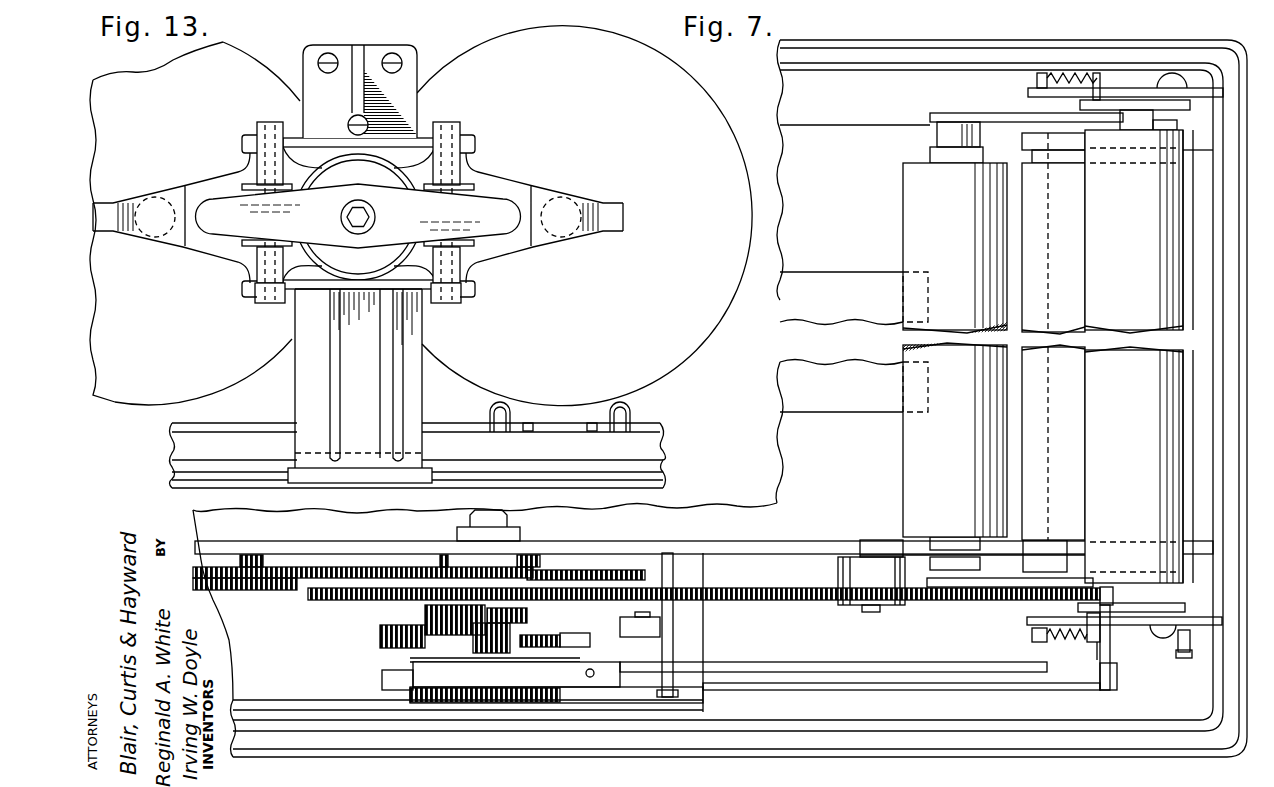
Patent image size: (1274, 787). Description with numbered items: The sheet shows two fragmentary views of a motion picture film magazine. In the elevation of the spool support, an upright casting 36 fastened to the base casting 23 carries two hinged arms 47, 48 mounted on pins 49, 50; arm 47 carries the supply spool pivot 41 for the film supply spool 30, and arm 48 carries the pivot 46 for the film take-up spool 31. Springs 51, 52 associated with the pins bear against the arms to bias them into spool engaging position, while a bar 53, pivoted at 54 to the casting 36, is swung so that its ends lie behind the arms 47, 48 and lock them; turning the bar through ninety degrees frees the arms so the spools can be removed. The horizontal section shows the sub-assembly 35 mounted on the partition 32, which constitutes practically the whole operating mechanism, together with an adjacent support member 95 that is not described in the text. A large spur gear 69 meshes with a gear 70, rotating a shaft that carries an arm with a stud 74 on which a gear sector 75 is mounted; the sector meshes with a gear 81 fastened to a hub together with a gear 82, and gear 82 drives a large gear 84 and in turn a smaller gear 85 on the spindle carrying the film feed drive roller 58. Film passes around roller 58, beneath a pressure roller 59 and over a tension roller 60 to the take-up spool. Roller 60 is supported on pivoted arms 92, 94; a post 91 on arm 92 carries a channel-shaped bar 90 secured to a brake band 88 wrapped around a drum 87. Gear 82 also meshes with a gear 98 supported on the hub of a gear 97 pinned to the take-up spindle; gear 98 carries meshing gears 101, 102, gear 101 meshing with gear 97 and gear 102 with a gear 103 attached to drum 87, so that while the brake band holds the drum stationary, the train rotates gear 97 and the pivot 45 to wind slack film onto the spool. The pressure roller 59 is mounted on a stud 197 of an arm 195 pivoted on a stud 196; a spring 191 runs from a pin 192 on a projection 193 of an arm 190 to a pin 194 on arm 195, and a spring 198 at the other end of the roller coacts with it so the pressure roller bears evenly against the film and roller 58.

In FIG. 13, the base casting 23 is at (172, 488).
In FIG. 13, the film supply spool 30 is at (655, 50).
In FIG. 13, the film take-up spool 31 is at (252, 56).
In FIG. 7, the partition 32 is at (752, 545).
In FIG. 7, the sub-assembly 35 is at (394, 666).
In FIG. 13, the upright casting 36 is at (412, 57).
In FIG. 13, the supply spool pivot 41 is at (580, 200).
In FIG. 7, the pivot 45 is at (462, 518).
In FIG. 13, the pivot 46 is at (150, 198).
In FIG. 13, the arm 47 is at (522, 190).
In FIG. 13, the arm 48 is at (195, 188).
In FIG. 13, the pin 49 is at (446, 130).
In FIG. 13, the pin 50 is at (272, 125).
In FIG. 13, the spring 51 is at (470, 183).
In FIG. 13, the spring 52 is at (242, 168).
In FIG. 13, the bar 53 is at (388, 240).
In FIG. 13, the pivot 54 is at (355, 205).
In FIG. 7, the drive roller 58 is at (1025, 440).
In FIG. 7, the pressure roller 59 is at (1090, 437).
In FIG. 7, the tension roller 60 is at (903, 443).
In FIG. 7, the spur gear 69 is at (280, 580).
In FIG. 7, the gear 70 is at (573, 570).
In FIG. 7, the stud 74 is at (645, 612).
In FIG. 7, the gear sector 75 is at (568, 638).
In FIG. 7, the gear 81 is at (528, 652).
In FIG. 7, the gear 82 is at (344, 600).
In FIG. 7, the large gear 84 is at (812, 596).
In FIG. 7, the gear 85 is at (1073, 604).
In FIG. 7, the drum 87 is at (478, 703).
In FIG. 7, the brake band 88 is at (513, 685).
In FIG. 7, the channel-shaped bar 90 is at (958, 672).
In FIG. 7, the post 91 is at (1113, 648).
In FIG. 7, the arm 92 is at (993, 583).
In FIG. 7, the arm 94 is at (996, 106).
In FIG. 7, the post 95 is at (673, 620).
In FIG. 7, the gear 97 is at (555, 605).
In FIG. 7, the gear 98 is at (560, 598).
In FIG. 7, the gear 101 is at (430, 613).
In FIG. 7, the gear 102 is at (380, 640).
In FIG. 7, the gear 103 is at (483, 652).
In FIG. 7, the arm 190 is at (1197, 617).
In FIG. 7, the spring 191 is at (1053, 638).
In FIG. 7, the pin 192 is at (1033, 638).
In FIG. 7, the projection 193 is at (1033, 628).
In FIG. 7, the pin 194 is at (1098, 648).
In FIG. 7, the arm 195 is at (1118, 577).
In FIG. 7, the stud 196 is at (1163, 638).
In FIG. 7, the stud 197 is at (1140, 610).
In FIG. 7, the spring 198 is at (1068, 73).